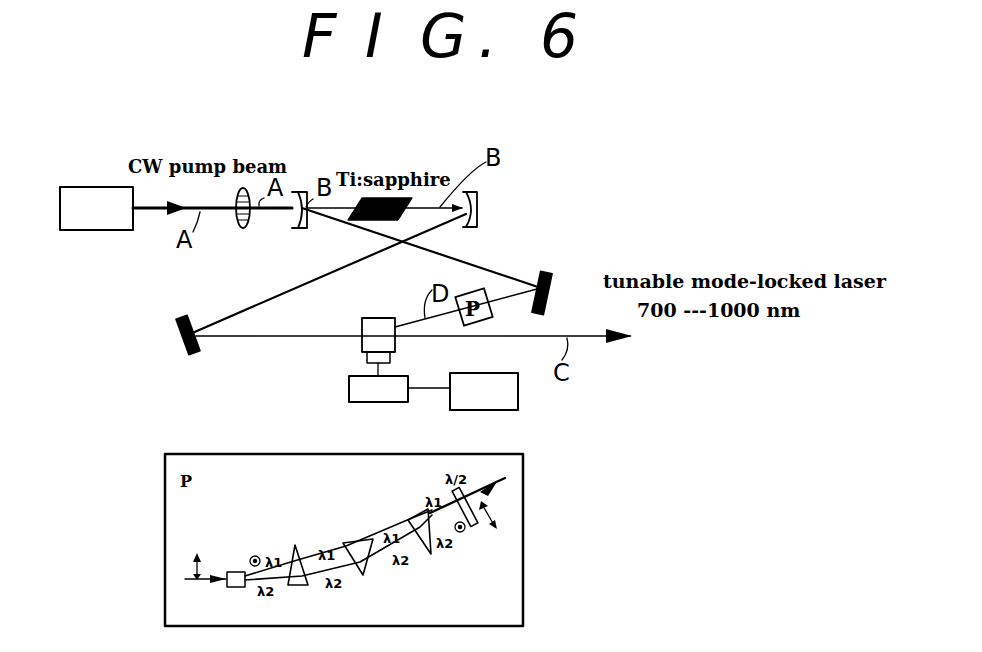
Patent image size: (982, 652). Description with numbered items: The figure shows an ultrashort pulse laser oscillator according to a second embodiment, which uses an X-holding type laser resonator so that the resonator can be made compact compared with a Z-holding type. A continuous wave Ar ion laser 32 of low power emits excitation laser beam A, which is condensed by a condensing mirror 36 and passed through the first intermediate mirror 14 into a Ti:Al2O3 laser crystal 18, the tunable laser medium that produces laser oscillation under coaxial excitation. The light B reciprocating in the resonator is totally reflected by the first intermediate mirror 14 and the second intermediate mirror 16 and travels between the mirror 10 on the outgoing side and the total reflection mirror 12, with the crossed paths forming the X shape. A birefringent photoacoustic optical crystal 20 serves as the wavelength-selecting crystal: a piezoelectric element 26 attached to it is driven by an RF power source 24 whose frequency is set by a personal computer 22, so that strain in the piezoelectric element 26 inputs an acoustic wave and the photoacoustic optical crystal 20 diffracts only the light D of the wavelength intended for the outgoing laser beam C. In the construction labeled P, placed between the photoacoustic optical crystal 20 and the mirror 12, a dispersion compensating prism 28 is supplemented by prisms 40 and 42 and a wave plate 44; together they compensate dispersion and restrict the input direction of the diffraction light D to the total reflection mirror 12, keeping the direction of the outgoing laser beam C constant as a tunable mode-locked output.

The mirror on outgoing side 10 is at (177, 338).
The total reflection mirror 12 is at (550, 291).
The first intermediate mirror 14 is at (296, 230).
The second intermediate mirror 16 is at (478, 194).
The Ti:Al2O3 laser crystal 18 is at (410, 198).
The photoacoustic optical crystal 20 is at (361, 322).
The personal computer 22 is at (519, 394).
The RF power source 24 is at (349, 396).
The piezoelectric element 26 is at (391, 357).
The dispersion compensating prism 28 is at (296, 586).
The CW-Ar ion laser 32 is at (72, 231).
The condensing mirror 36 is at (243, 229).
The prism 40 is at (370, 568).
The prism 42 is at (414, 509).
The wave plate 44 is at (476, 530).